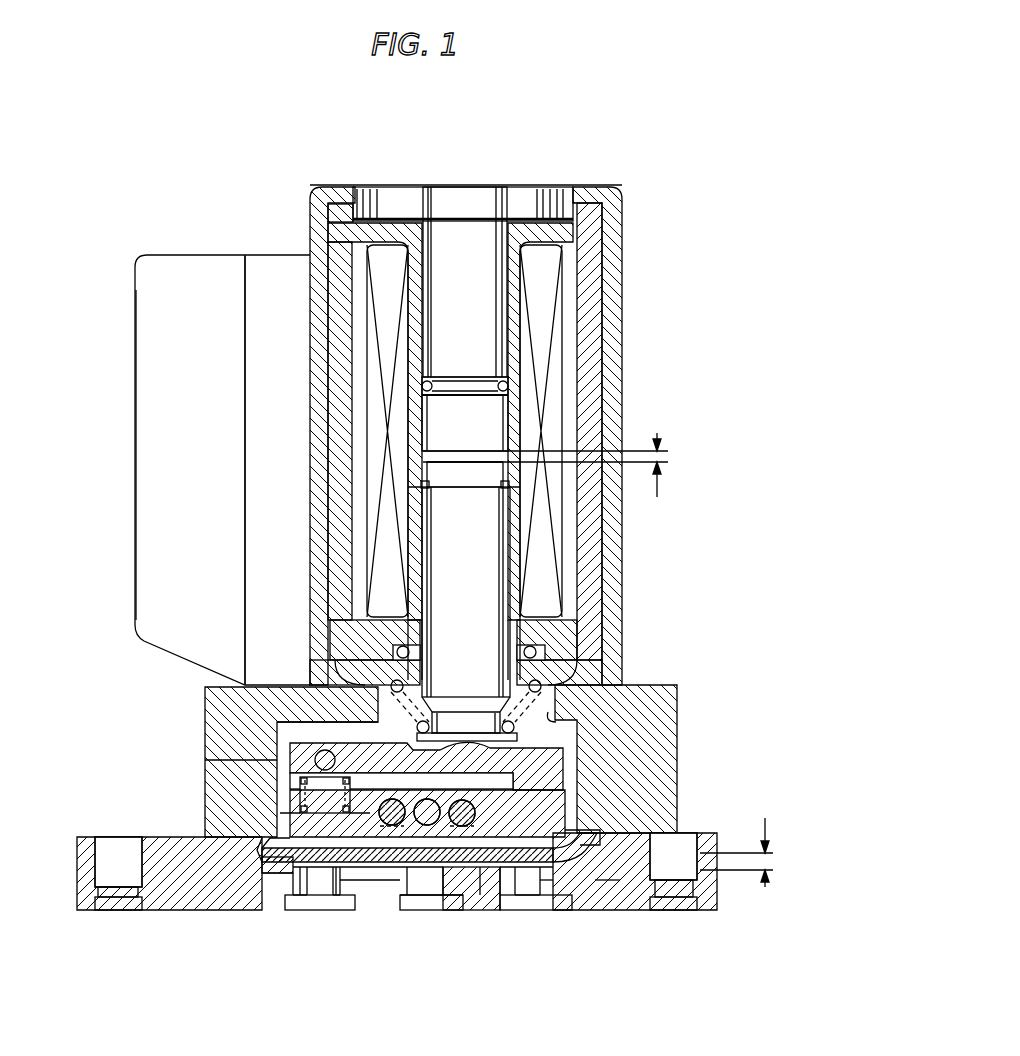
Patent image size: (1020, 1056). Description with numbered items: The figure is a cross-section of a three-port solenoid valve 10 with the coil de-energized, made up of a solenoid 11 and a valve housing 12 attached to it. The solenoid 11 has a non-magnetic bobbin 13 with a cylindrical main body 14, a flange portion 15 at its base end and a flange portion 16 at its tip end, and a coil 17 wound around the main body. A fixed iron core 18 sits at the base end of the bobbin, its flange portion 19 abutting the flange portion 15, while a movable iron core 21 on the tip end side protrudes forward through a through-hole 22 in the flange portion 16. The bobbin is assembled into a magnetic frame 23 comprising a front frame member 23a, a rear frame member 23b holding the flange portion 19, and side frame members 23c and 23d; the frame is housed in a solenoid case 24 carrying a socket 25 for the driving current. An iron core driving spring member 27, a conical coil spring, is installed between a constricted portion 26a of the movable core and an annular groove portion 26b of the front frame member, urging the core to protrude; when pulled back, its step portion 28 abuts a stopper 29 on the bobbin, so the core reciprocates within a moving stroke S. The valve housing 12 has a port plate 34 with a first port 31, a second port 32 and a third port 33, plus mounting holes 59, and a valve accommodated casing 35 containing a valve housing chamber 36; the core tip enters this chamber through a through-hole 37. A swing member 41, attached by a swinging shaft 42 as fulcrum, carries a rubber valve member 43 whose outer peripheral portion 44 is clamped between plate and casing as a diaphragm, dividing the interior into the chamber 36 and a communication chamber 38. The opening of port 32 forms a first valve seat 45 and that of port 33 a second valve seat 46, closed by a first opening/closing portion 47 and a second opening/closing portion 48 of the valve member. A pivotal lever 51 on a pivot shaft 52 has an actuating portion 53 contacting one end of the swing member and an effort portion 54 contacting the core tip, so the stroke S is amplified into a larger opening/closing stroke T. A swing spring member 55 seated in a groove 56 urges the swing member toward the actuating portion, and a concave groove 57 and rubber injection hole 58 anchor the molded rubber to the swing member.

The solenoid valve 10 is at (631, 165).
The solenoid 11 is at (126, 261).
The valve housing 12 is at (198, 733).
The bobbin 13 is at (522, 400).
The cylindrical main body 14 is at (551, 601).
The flange portion 15 is at (332, 237).
The flange portion 16 is at (345, 632).
The coil 17 is at (560, 355).
The fixed iron core 18 is at (460, 233).
The flange portion 19 is at (528, 205).
The movable iron core 21 is at (478, 590).
The through-hole 22 is at (542, 622).
The magnetic frame 23 is at (606, 250).
The front frame member 23a is at (578, 680).
The rear frame member 23b is at (338, 213).
The side frame member 23c is at (338, 440).
The side frame member 23d is at (600, 286).
The solenoid case 24 is at (318, 340).
The socket 25 is at (160, 578).
The constricted portion 26a is at (562, 718).
The annular groove portion 26b is at (566, 700).
The iron core driving spring member 27 is at (385, 717).
The step portion 28 is at (533, 487).
The stopper 29 is at (425, 490).
The first port 31 is at (430, 866).
The second port 32 is at (528, 882).
The third port 33 is at (336, 882).
The port plate 34 is at (180, 897).
The valve accommodated casing 35 is at (225, 775).
The valve housing chamber 36 is at (290, 735).
The through-hole 37 is at (552, 712).
The communication chamber 38 is at (265, 876).
The swing member 41 is at (490, 882).
The swinging shaft 42 is at (416, 886).
The valve member 43 is at (376, 882).
The outer peripheral portion 44 is at (588, 836).
The first valve seat 45 is at (605, 892).
The second valve seat 46 is at (297, 882).
The first opening/closing portion 47 is at (555, 892).
The second opening/closing portion 48 is at (312, 882).
The pivotal lever 51 is at (492, 752).
The pivot shaft 52 is at (300, 793).
The actuating portion 53 is at (562, 778).
The effort portion 54 is at (505, 886).
The swing spring member 55 is at (290, 817).
The groove 56 is at (342, 882).
The concave groove 57 is at (602, 826).
The rubber injection hole 58 is at (458, 876).
The mounting holes 59 is at (118, 900).
The moving stroke S is at (554, 465).
The opening/closing stroke T is at (745, 852).